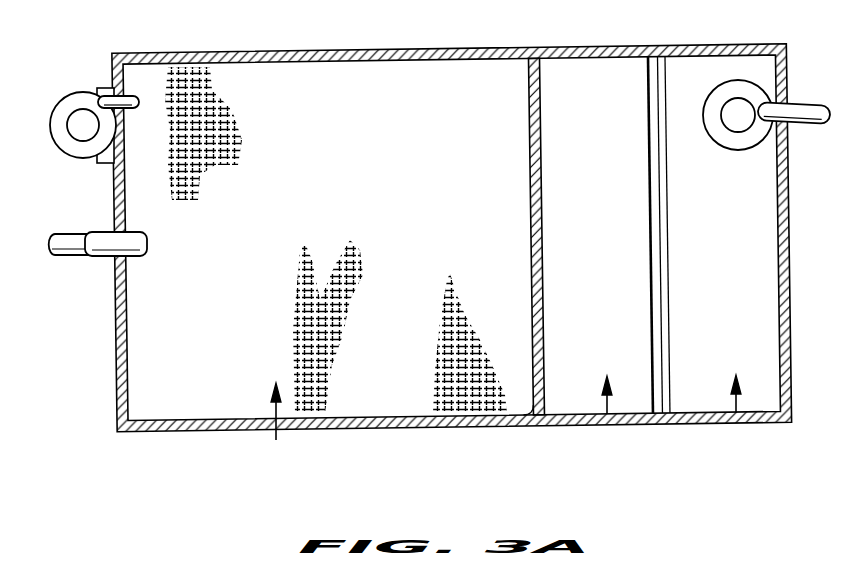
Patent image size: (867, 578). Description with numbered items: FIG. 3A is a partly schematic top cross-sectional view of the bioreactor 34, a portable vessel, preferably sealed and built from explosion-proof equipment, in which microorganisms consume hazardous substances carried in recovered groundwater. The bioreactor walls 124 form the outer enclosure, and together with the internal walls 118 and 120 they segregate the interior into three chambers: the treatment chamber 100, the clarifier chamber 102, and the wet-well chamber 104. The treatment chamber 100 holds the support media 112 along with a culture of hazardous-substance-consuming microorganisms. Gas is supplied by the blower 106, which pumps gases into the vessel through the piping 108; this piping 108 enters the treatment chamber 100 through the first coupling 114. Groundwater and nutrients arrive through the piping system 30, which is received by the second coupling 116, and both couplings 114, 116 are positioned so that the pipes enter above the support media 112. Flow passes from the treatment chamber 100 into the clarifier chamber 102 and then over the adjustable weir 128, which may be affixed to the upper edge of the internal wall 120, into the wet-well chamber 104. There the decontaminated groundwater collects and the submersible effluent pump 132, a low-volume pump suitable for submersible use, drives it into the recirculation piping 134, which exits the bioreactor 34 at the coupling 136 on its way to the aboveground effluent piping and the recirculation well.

The piping system 30 is at (62, 240).
The bioreactor 34 is at (82, 389).
The treatment chamber 100 is at (276, 440).
The clarifier chamber 102 is at (611, 428).
The wet-well chamber 104 is at (732, 416).
The blower 106 is at (73, 148).
The piping 108 is at (114, 96).
The support media 112 is at (226, 347).
The first coupling 114 is at (126, 96).
The second coupling 116 is at (113, 230).
The internal wall 118 is at (527, 407).
The internal wall 120 is at (653, 388).
The bioreactor walls 124 is at (357, 50).
The adjustable weir 128 is at (668, 386).
The submersible effluent pump 132 is at (725, 90).
The recirculation piping 134 is at (819, 122).
The coupling 136 is at (790, 92).